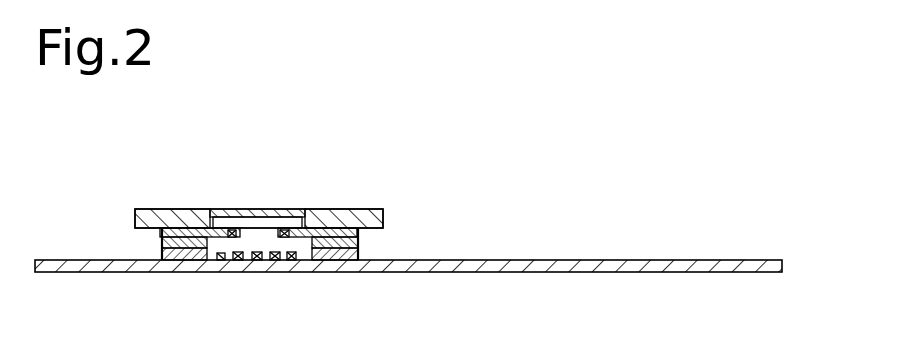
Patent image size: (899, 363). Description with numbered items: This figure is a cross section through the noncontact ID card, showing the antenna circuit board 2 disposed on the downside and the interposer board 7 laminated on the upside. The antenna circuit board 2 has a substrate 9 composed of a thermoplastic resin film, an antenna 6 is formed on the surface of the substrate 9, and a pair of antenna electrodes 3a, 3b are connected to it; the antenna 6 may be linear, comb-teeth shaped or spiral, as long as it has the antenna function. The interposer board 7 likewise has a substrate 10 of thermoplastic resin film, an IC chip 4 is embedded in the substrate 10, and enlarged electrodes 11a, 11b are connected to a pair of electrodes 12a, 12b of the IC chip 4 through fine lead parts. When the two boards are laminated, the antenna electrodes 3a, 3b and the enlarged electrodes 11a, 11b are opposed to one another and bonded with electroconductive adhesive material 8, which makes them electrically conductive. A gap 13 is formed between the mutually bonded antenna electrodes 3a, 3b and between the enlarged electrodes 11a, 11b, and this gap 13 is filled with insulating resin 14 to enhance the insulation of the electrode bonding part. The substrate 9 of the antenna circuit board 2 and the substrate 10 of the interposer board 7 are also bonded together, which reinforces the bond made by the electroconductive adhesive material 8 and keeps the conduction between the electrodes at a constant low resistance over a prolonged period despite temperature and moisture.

The antenna circuit board 2 is at (463, 273).
The antenna electrode 3a is at (177, 270).
The antenna electrode 3b is at (352, 270).
The IC chip 4 is at (293, 228).
The antenna 6 is at (272, 262).
The interposer board 7 is at (176, 208).
The electroconductive adhesive material 8 is at (163, 244).
The substrate 9 is at (655, 267).
The substrate 10 is at (250, 208).
The enlarged electrode 11a is at (160, 234).
The enlarged electrode 11b is at (358, 235).
The electrode 12a is at (237, 260).
The electrode 12b is at (292, 260).
The gap 13 is at (218, 266).
The insulating resin 14 is at (226, 234).